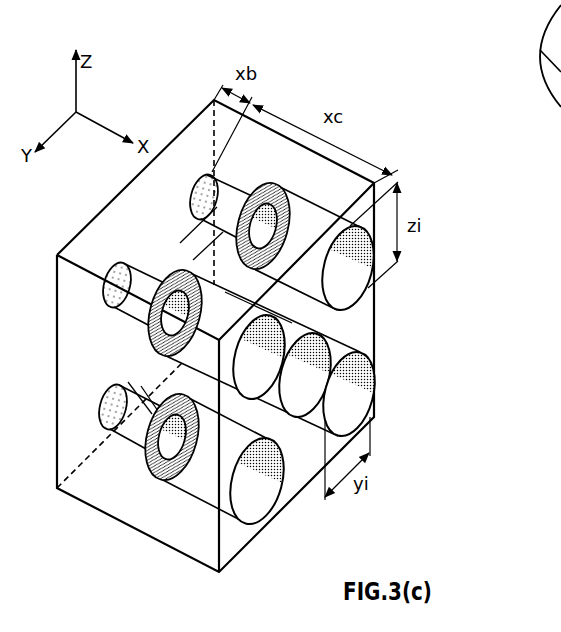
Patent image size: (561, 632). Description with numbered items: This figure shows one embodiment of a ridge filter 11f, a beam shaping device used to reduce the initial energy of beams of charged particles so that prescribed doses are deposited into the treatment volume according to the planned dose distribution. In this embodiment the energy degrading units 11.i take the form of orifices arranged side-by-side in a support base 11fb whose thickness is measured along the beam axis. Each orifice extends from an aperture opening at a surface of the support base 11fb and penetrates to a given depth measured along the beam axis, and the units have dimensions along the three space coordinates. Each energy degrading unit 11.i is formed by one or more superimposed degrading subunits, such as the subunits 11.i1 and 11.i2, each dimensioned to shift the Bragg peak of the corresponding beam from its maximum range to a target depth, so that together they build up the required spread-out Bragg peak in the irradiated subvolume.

The ridge filter 11f is at (311, 72).
The support base 11fb is at (541, 50).
The degrading subunit 11.i2 is at (232, 193).
The degrading subunit 11.i1 is at (313, 210).
The energy degrading unit 11.i is at (343, 283).